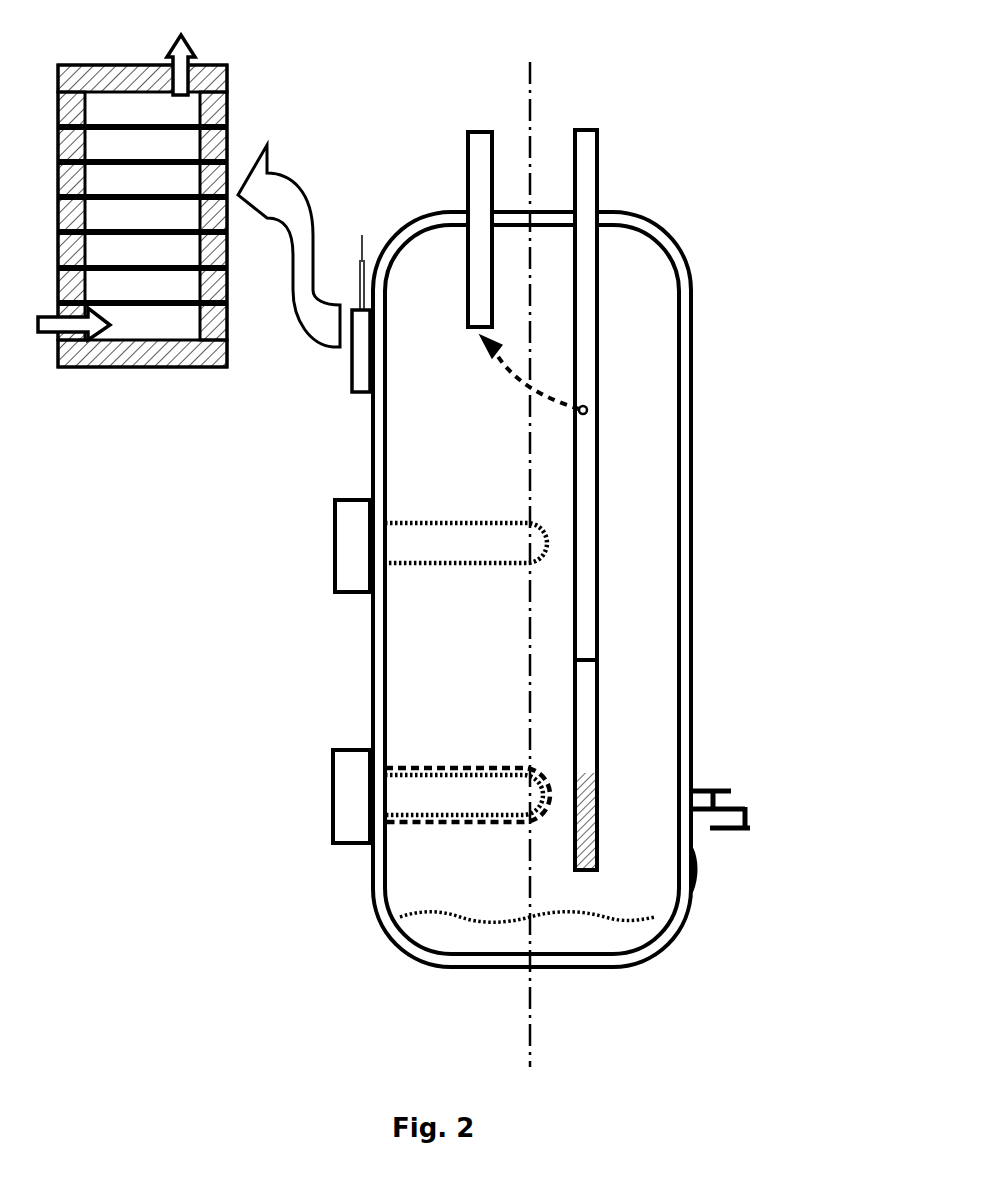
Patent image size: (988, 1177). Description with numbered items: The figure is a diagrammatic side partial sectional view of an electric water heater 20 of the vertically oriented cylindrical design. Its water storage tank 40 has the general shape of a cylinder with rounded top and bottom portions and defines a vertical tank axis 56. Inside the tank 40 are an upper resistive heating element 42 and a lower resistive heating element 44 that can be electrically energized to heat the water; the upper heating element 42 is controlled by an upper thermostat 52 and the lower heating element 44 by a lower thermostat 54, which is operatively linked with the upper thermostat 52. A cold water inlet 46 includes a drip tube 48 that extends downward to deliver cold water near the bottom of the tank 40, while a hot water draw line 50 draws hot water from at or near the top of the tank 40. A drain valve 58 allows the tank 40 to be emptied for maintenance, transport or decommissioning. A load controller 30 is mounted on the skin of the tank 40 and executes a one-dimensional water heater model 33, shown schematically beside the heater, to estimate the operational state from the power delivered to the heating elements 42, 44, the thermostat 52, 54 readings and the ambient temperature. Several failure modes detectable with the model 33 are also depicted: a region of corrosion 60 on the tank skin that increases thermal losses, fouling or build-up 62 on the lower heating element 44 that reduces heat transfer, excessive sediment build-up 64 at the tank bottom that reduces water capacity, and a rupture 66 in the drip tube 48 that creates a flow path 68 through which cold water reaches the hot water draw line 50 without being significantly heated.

The electric water heater 20 is at (608, 589).
The load controller 30 is at (350, 357).
The 1D water heater model 33 is at (243, 137).
The water storage tank 40 is at (677, 562).
The upper resistive heating element 42 is at (448, 523).
The lower resistive heating element 44 is at (446, 777).
The cold water inlet 46 is at (588, 170).
The drip tube 48 is at (584, 661).
The hot water draw line 50 is at (478, 172).
The upper thermostat 52 is at (334, 548).
The lower thermostat 54 is at (333, 808).
The vertical tank axis 56 is at (534, 104).
The drain valve 58 is at (735, 802).
The region of corrosion 60 is at (687, 865).
The fouling or build-up 62 is at (456, 823).
The sediment build-up 64 is at (611, 914).
The rupture 66 is at (587, 413).
The flow path 68 is at (515, 383).